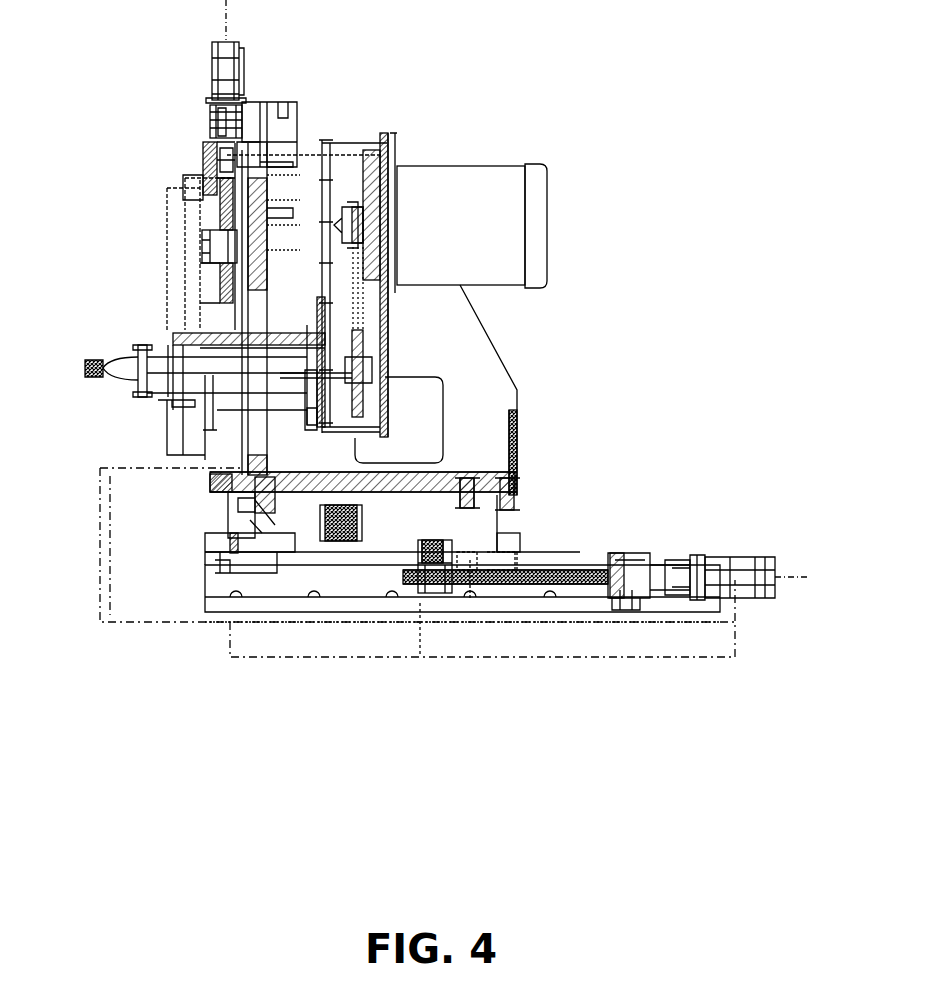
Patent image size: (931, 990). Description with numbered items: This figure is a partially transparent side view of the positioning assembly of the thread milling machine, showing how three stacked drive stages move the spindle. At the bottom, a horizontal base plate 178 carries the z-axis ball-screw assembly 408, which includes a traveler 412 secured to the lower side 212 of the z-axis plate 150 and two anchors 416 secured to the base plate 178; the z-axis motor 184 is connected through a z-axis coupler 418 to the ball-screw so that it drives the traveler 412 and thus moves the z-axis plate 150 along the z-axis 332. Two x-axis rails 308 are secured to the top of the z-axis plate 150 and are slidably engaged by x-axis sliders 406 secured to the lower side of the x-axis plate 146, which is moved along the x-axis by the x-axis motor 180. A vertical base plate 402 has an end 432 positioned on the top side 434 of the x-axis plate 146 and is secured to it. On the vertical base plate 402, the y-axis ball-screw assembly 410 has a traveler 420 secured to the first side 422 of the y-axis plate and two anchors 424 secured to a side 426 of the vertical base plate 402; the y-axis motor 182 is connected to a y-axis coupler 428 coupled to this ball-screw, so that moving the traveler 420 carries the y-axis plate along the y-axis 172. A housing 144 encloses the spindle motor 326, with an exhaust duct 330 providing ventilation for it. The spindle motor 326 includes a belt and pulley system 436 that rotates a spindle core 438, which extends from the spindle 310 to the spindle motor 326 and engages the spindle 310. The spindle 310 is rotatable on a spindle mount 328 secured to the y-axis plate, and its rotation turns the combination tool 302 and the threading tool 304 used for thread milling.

The housing 144 is at (490, 340).
The x-axis plate 146 is at (522, 482).
The z-axis plate 150 is at (512, 536).
The y-axis 172 is at (229, 26).
The horizontal base plate 178 is at (695, 605).
The x-axis motor 180 is at (362, 515).
The y-axis motor 182 is at (222, 42).
The z-axis motor 184 is at (722, 556).
The lower side 212 is at (500, 580).
The combination tool 302 is at (118, 380).
The threading tool 304 is at (97, 355).
The x-axis rail 308 is at (242, 515).
The spindle 310 is at (160, 395).
The spindle motor 326 is at (353, 138).
The spindle mount 328 is at (172, 416).
The exhaust duct 330 is at (548, 195).
The z-axis 332 is at (802, 580).
The vertical base plate 402 is at (268, 218).
The x-axis slider 406 is at (230, 505).
The z-axis ball-screw assembly 408 is at (580, 555).
The y-axis ball-screw assembly 410 is at (190, 196).
The traveler 412 is at (432, 592).
The anchors 416 is at (638, 610).
The z-axis coupler 418 is at (674, 560).
The traveler 420 is at (198, 250).
The first side 422 is at (197, 300).
The anchors 424 is at (212, 160).
The side 426 is at (210, 215).
The y-axis coupler 428 is at (210, 110).
The end 432 is at (259, 505).
The top side 434 is at (515, 474).
The belt and pulley system 436 is at (380, 305).
The spindle core 438 is at (337, 395).